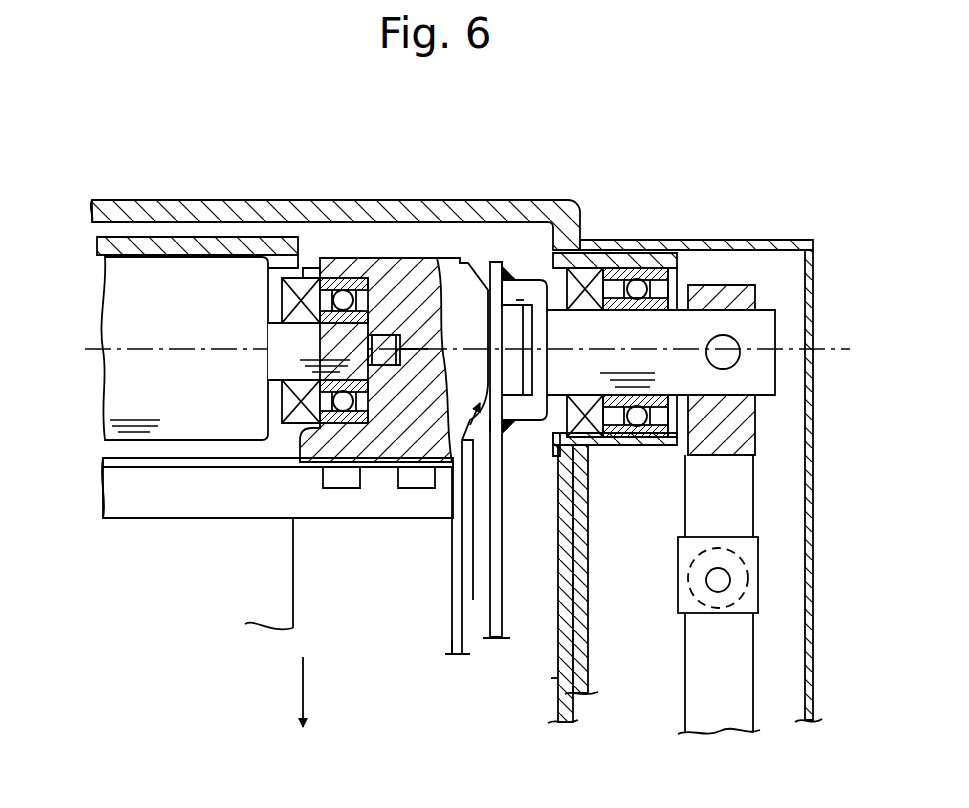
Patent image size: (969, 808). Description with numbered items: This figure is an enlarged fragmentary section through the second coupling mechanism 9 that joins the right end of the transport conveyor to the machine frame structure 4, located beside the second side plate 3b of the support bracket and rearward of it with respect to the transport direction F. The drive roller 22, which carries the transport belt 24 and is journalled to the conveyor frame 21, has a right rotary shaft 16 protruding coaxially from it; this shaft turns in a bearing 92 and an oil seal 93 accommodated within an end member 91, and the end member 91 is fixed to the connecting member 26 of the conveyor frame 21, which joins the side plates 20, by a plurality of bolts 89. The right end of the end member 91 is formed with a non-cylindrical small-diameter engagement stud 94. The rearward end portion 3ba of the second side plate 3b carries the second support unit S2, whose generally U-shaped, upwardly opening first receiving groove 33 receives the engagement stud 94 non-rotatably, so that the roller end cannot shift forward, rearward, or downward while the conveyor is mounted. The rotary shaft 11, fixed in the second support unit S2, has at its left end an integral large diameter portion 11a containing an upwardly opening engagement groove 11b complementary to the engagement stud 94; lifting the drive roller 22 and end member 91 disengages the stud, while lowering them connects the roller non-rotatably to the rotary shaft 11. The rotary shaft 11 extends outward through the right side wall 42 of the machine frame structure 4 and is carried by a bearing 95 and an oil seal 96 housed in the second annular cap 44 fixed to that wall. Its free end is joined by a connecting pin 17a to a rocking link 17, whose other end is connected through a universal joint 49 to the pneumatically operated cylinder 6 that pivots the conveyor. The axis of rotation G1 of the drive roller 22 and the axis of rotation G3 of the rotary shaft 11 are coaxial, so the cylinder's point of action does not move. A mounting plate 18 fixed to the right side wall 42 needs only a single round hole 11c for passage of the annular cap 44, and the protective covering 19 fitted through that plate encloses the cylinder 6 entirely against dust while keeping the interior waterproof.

The machine frame structure 4 is at (250, 205).
The transport belt 24 is at (190, 250).
The oil seal 93 is at (313, 285).
The bearing 92 is at (355, 272).
The end member 91 is at (428, 255).
The second coupling mechanism 9 is at (462, 245).
The rearward end portion of second side plate 3ba is at (497, 262).
The engagement stud 94 is at (520, 300).
The large diameter portion 11a is at (545, 290).
The oil seal 96 is at (590, 270).
The bearing 95 is at (636, 285).
The second annular cap 44 is at (668, 245).
The axis of rotation of drive roller G1 is at (133, 346).
The right rotary shaft 16 is at (270, 362).
The drive roller 22 is at (176, 430).
The conveyor frame 21 is at (190, 522).
The connecting member 26 is at (262, 508).
The bolts 89 is at (398, 487).
The first receiving groove 33 is at (436, 468).
The second support unit S2 is at (455, 562).
The side plate 20 is at (452, 640).
The second side plate 3b is at (503, 590).
The engagement groove 11b is at (507, 424).
The right side wall 42 is at (558, 678).
The mounting plate 18 is at (583, 655).
The round hole 11c is at (590, 442).
The rotary shaft 11 is at (765, 338).
The axis of rotation of rotary shaft G3 is at (844, 351).
The connecting pin 17a is at (730, 362).
The rocking link 17 is at (740, 492).
The protective covering 19 is at (808, 565).
The universal joint 49 is at (745, 590).
The pneumatically operated cylinder 6 is at (737, 657).
The transport direction F is at (300, 683).